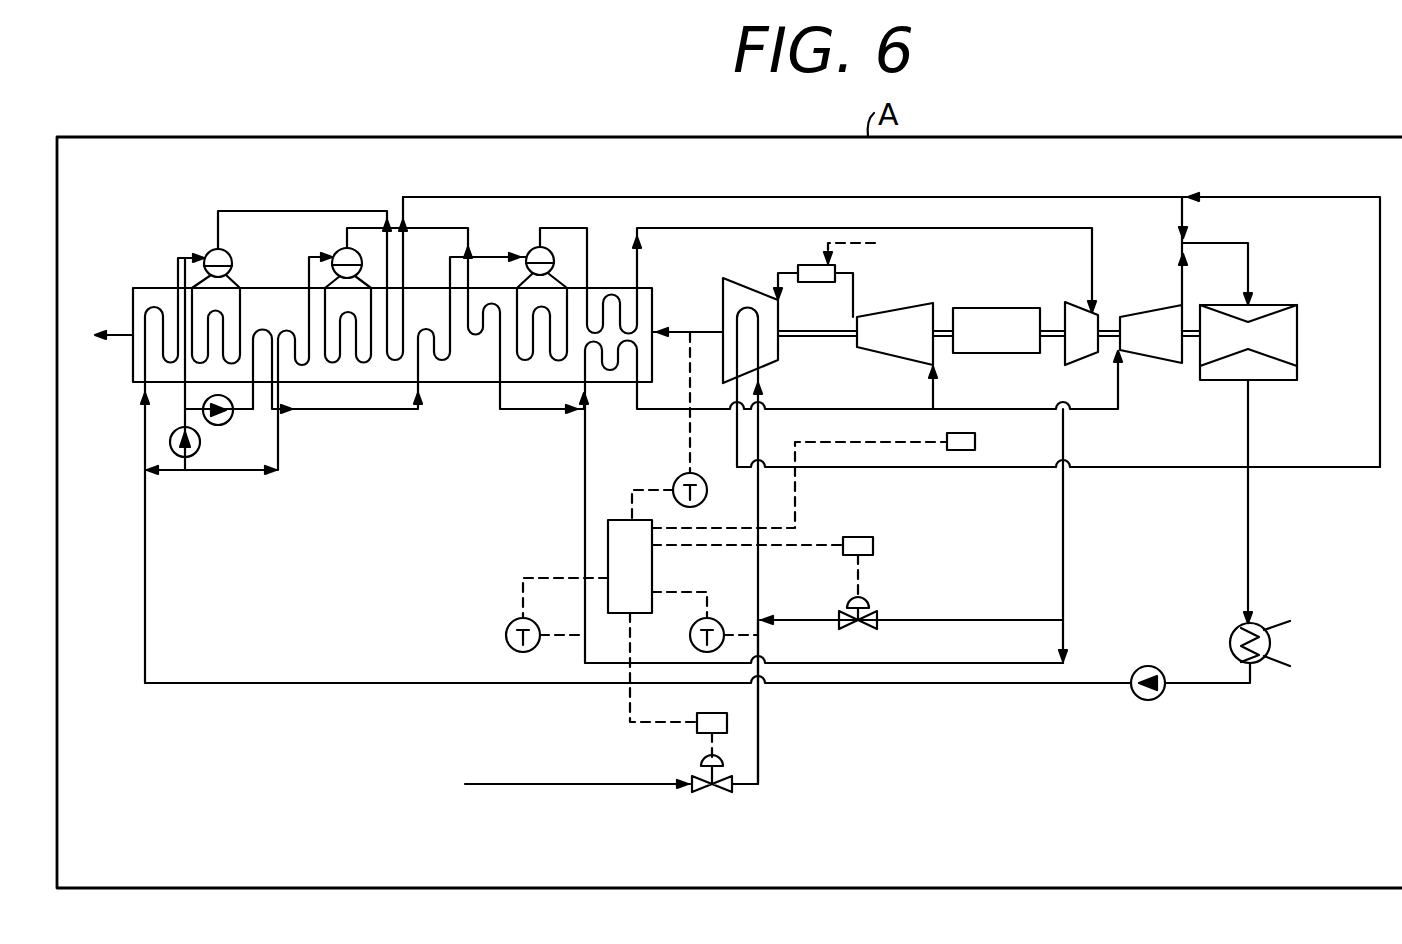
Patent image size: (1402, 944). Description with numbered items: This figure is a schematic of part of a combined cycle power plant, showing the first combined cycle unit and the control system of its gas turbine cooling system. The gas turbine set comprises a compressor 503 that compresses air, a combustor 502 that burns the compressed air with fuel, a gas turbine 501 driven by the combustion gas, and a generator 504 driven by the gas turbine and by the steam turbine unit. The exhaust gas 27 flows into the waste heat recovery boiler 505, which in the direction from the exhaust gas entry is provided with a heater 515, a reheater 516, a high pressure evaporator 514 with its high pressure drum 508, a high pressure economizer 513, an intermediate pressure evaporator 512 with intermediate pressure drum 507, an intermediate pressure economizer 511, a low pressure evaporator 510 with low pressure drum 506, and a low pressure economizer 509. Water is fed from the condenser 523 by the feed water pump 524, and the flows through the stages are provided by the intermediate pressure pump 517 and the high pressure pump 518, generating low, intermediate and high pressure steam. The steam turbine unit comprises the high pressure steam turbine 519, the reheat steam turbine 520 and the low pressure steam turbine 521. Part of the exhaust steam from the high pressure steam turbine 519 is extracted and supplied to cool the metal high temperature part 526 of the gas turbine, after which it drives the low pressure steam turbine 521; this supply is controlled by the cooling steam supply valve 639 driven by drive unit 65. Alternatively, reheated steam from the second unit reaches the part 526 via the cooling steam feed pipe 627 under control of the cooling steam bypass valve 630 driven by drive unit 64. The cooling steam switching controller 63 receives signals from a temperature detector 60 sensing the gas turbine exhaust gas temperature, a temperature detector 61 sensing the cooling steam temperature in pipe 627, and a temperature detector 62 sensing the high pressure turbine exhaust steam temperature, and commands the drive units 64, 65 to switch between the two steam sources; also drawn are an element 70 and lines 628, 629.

The waste heat recovery boiler 505 is at (166, 298).
The low pressure drum 506 is at (213, 250).
The intermediate pressure drum 507 is at (336, 250).
The high pressure drum 508 is at (532, 247).
The low pressure economizer 509 is at (153, 315).
The low pressure evaporator 510 is at (220, 322).
The intermediate pressure economizer 511 is at (300, 360).
The intermediate pressure evaporator 512 is at (363, 360).
The high pressure economizer 513 is at (442, 355).
The high pressure evaporator 514 is at (542, 350).
The heater 515 is at (610, 300).
The reheater 516 is at (613, 360).
The intermediate pressure pump 517 is at (170, 442).
The high pressure pump 518 is at (222, 426).
The high pressure steam turbine 519 is at (1077, 340).
The reheat steam turbine 520 is at (1152, 345).
The low pressure steam turbine 521 is at (1270, 328).
The condenser 523 is at (1273, 633).
The feed water pump 524 is at (1160, 690).
The gas turbine 501 is at (905, 330).
The combustor 502 is at (810, 268).
The gas turbine 503 is at (765, 340).
The generator 504 is at (990, 330).
The metal high temperature part 526 is at (747, 308).
The exhaust gas 27 is at (705, 332).
The temperature detector 60 is at (706, 500).
The temperature detector 61 is at (713, 618).
The temperature detector 62 is at (505, 636).
The cooling steam switching controller 63 is at (620, 563).
The drive unit 64 is at (728, 722).
The drive unit 65 is at (863, 535).
The flow sensor 70 is at (976, 441).
The cooling steam feed pipe 627 is at (759, 768).
The return line 628 is at (932, 468).
The bypass line 629 is at (988, 617).
The cooling steam bypass valve 630 is at (703, 790).
The cooling steam supply valve 639 is at (872, 613).